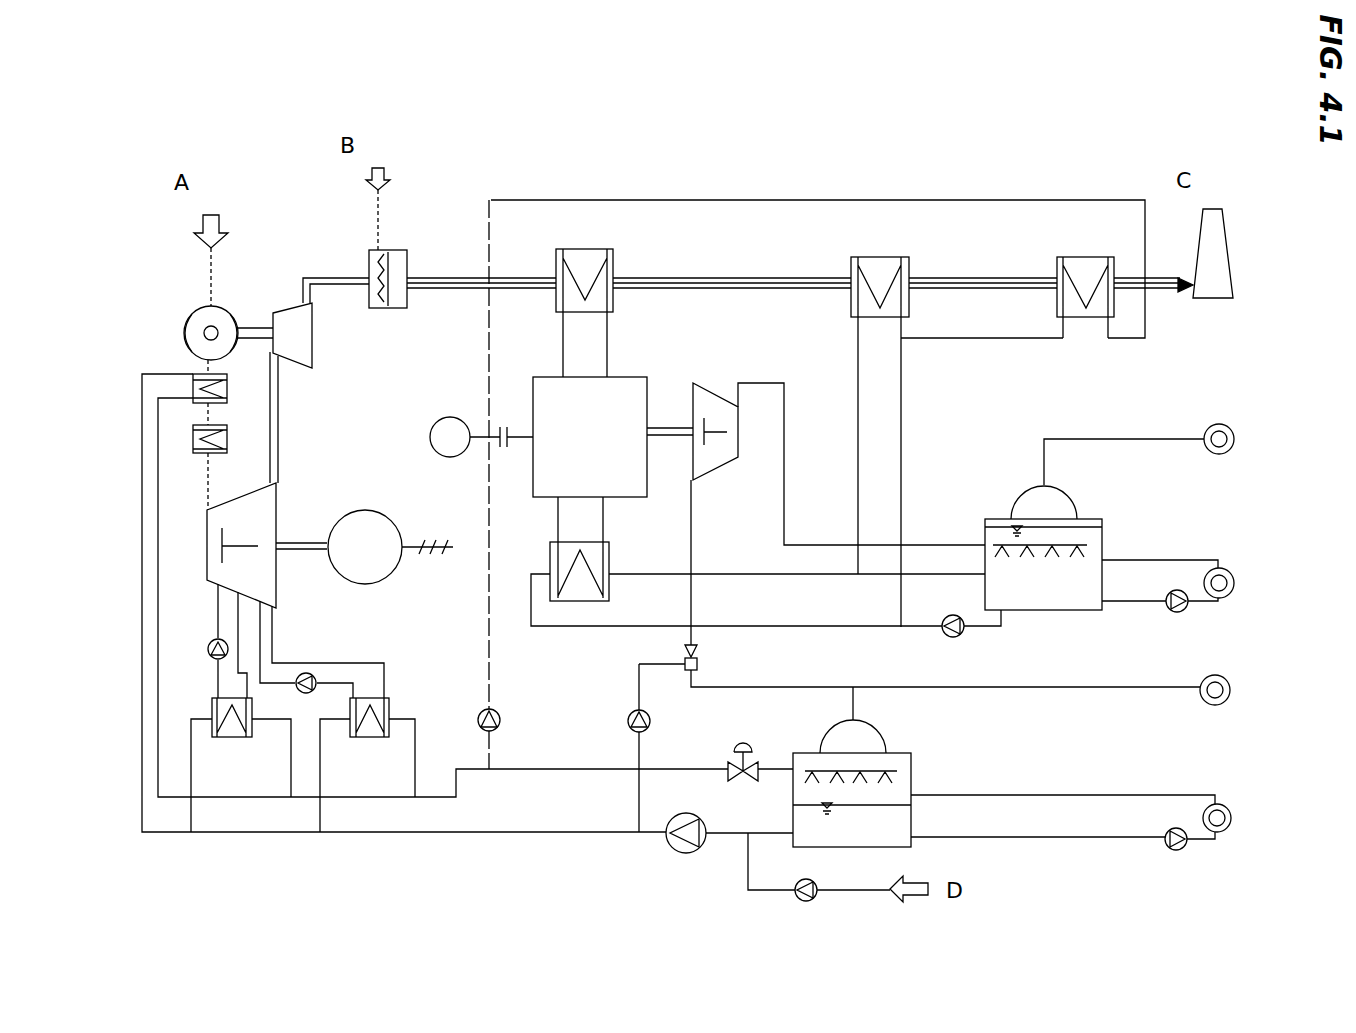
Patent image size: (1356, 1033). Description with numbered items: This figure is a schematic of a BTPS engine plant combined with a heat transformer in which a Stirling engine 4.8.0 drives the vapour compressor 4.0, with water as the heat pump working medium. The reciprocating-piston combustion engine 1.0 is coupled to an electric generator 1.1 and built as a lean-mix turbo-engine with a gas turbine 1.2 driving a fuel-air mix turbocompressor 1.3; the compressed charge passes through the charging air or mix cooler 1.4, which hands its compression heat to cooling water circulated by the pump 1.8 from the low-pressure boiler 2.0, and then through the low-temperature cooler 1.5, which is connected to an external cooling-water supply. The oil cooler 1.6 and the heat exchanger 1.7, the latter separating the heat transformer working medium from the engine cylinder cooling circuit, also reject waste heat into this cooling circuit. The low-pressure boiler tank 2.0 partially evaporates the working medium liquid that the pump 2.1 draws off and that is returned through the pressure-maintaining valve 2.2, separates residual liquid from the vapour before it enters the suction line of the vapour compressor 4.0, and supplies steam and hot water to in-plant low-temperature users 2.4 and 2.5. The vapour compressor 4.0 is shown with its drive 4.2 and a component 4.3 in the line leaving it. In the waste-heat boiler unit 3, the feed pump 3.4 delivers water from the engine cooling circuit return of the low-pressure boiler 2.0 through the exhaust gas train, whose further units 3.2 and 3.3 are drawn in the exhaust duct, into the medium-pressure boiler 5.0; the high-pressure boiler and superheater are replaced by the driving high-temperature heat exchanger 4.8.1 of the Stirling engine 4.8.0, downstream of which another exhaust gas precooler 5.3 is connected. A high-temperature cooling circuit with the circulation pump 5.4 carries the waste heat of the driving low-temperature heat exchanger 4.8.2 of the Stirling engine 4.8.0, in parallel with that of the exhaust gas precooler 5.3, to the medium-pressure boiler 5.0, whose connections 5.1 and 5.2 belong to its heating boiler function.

The reciprocating-piston combustion engine 1.0 is at (267, 545).
The electric generator 1.1 is at (390, 539).
The gas turbine 1.2 is at (276, 335).
The fuel-air mix turbocompressor 1.3 is at (197, 332).
The charging air or mix cooler 1.4 is at (225, 388).
The low-temperature cooler 1.5 is at (225, 439).
The oil cooler 1.6 is at (233, 732).
The heat exchanger 1.7 is at (370, 732).
The pump 1.8 is at (680, 844).
The low-pressure boiler 2.0 is at (864, 781).
The pump 2.1 is at (810, 901).
The pressure-maintaining valve 2.2 is at (747, 746).
The in-plant low-temperature user 2.4 is at (1221, 801).
The in-plant low-temperature user 2.5 is at (1219, 676).
The waste heat motive-steam high-pressure boiler unit 3 is at (440, 567).
The combustion chamber 3.2 is at (388, 295).
The exhaust gas heat exchanger 3.3 is at (1085, 302).
The feed pump 3.4 is at (472, 721).
The vapour compressor 4.0 is at (715, 422).
The drive 4.2 is at (481, 419).
The valve 4.3 is at (676, 674).
The Stirling engine 4.8.0 is at (613, 437).
The driving high-temperature heat exchanger 4.8.1 is at (613, 313).
The driving low-temperature heat exchanger 4.8.2 is at (607, 549).
The medium-pressure boiler 5.0 is at (1042, 548).
The connection 5.1 is at (1222, 567).
The medium-pressure heating boiler component 5.2 is at (1222, 428).
The exhaust gas precooler 5.3 is at (880, 442).
The circulation pump 5.4 is at (954, 640).